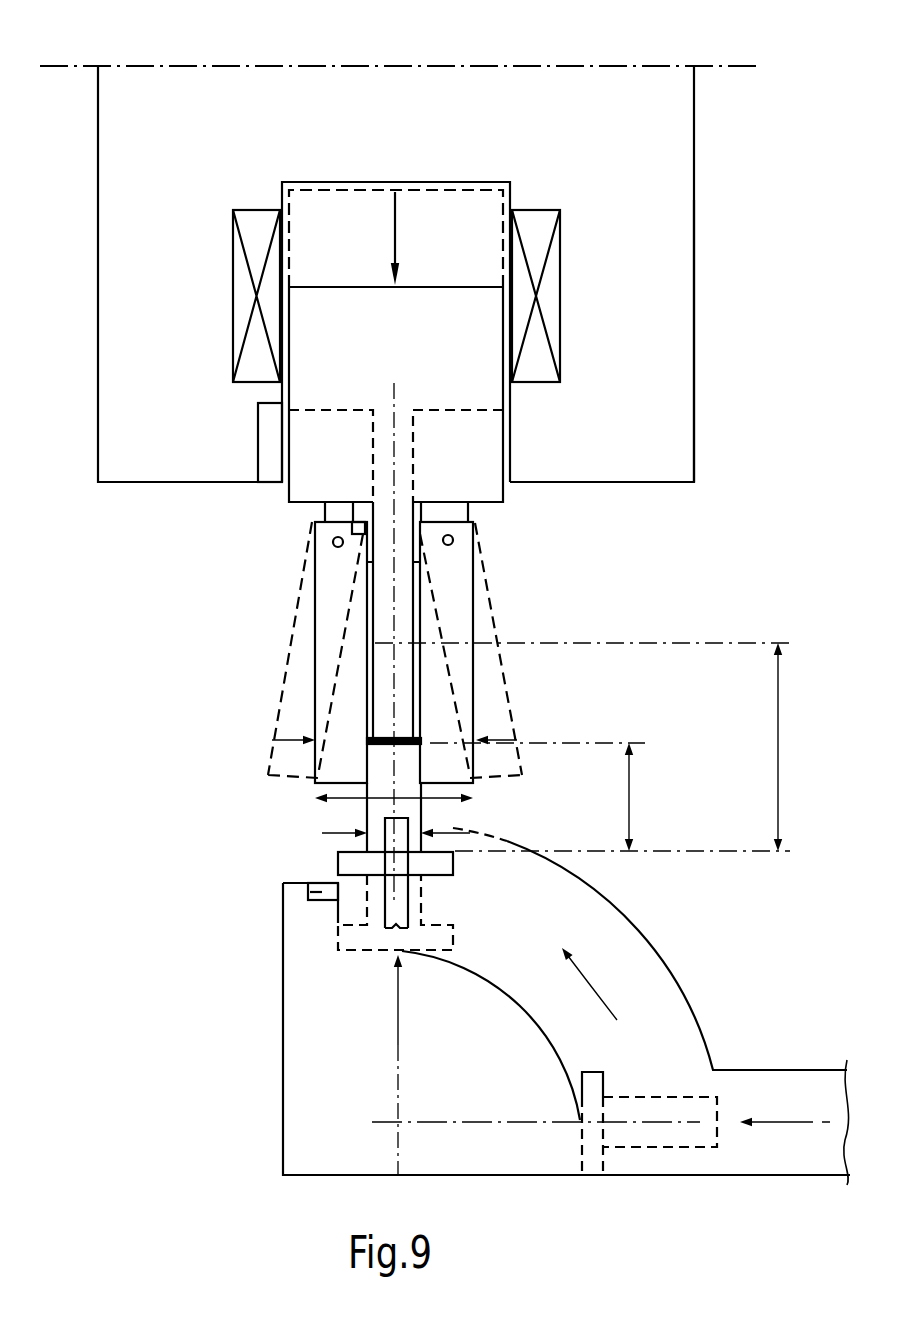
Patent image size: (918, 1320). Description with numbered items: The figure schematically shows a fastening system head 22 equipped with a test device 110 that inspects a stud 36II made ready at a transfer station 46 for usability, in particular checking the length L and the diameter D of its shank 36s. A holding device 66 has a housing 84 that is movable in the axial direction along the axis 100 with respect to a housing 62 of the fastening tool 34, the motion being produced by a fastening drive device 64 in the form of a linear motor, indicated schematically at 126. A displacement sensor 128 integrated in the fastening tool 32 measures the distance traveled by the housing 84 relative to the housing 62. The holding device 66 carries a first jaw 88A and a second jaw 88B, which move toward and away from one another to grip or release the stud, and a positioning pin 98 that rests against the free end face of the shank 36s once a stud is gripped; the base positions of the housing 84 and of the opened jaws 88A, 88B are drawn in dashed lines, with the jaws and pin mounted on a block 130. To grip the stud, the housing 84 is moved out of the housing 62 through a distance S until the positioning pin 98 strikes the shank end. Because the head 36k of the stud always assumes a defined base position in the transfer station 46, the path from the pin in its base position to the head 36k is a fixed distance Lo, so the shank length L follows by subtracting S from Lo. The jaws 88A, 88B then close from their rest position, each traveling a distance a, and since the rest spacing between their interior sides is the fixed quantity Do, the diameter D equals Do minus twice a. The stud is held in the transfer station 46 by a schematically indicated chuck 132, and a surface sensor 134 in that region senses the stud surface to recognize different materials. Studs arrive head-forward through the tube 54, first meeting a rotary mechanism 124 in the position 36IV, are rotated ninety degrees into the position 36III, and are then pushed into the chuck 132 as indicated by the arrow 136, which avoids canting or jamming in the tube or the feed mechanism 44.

The fastening system head 22 is at (781, 74).
The fastening tool 34 is at (735, 67).
The housing 62 is at (165, 200).
The fastening tool 32 is at (662, 316).
The fastening drive device 64 is at (578, 366).
The linear motor 126 is at (548, 277).
The housing 84 is at (322, 382).
The displacement sensor 128 is at (270, 446).
The pivot block 130 is at (355, 528).
The first jaw 88A is at (337, 580).
The second jaw 88B is at (457, 600).
The positioning pin 98 is at (388, 620).
The axis 100 is at (393, 685).
The shank 36s is at (393, 777).
The chuck 132 is at (398, 908).
The head 36k is at (365, 873).
The stud 36II is at (343, 862).
The surface sensor 134 is at (322, 892).
The stud position 36III is at (355, 940).
The stud position 36IV is at (590, 1160).
The transfer station 46 is at (260, 838).
The feed mechanism 44 is at (262, 1117).
The rotary mechanism 124 is at (745, 1003).
The arrow 136 is at (398, 1013).
The tube 54 is at (786, 1154).
The test device 110 is at (600, 512).
The holding device 66 is at (545, 532).
The distance traveled S is at (400, 228).
The jaw travel distance a is at (288, 740).
The shank diameter D is at (455, 832).
The jaw rest spacing Do is at (356, 800).
The shank length L is at (630, 787).
The fixed distance Lo is at (778, 753).